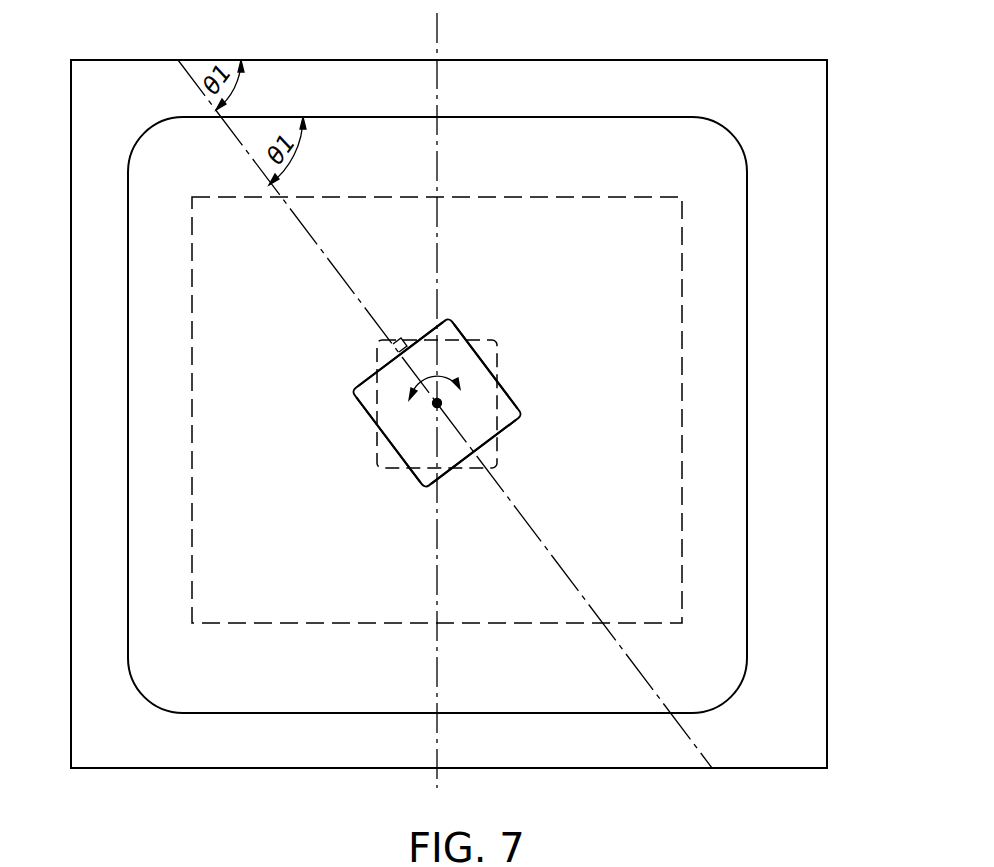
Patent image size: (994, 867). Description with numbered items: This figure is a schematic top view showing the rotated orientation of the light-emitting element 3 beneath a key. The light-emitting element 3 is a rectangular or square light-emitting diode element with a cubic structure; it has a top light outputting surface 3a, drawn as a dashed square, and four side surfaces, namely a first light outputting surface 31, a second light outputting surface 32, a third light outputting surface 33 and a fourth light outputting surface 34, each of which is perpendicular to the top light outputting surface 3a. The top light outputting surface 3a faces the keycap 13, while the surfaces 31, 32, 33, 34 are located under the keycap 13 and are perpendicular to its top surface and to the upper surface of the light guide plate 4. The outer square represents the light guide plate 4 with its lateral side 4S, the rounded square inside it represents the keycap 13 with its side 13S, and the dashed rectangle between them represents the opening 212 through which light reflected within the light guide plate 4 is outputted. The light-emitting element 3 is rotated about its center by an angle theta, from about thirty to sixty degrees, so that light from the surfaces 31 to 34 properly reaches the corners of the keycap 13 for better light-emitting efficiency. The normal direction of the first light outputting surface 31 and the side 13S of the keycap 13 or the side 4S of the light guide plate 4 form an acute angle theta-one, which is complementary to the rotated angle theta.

The light-emitting element 3 is at (351, 396).
The top light outputting surface 3a is at (417, 427).
The first light outputting surface 31 is at (423, 327).
The second light outputting surface 32 is at (505, 393).
The third light outputting surface 33 is at (507, 430).
The fourth light outputting surface 34 is at (413, 477).
The light guide plate 4 is at (790, 185).
The lateral side of light guide plate 4S is at (762, 60).
The keycap 13 is at (715, 475).
The side of keycap 13S is at (625, 117).
The opening 212 is at (552, 196).